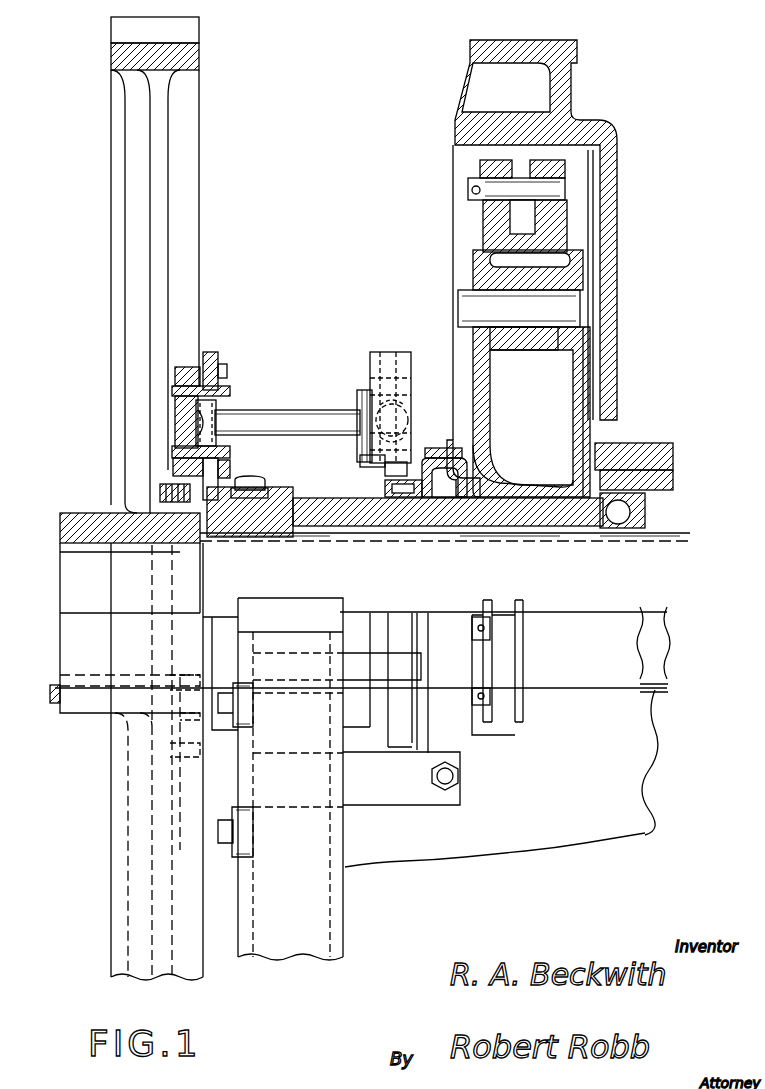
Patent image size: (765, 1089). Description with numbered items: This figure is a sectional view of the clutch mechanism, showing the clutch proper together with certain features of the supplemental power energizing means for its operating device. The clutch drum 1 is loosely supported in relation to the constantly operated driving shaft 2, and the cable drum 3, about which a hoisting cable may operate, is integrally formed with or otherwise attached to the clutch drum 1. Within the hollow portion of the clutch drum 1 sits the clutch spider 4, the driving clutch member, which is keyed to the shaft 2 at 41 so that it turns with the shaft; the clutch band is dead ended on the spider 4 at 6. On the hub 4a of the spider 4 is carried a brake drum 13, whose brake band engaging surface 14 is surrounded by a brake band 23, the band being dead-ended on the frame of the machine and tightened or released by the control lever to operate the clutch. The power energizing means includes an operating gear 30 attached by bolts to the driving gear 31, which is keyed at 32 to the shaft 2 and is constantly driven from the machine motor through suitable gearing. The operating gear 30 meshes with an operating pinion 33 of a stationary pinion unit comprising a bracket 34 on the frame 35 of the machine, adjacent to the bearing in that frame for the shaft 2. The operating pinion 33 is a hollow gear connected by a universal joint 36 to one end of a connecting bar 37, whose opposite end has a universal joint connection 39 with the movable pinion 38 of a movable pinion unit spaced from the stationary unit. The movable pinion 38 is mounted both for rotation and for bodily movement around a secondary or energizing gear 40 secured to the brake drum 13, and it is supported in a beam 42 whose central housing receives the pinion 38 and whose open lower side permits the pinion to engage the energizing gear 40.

The clutch drum 1 is at (614, 138).
The driving shaft 2 is at (682, 549).
The cable drum 3 is at (648, 447).
The clutch spider 4 is at (575, 346).
The hub 4a is at (500, 488).
The dead end of clutch band 6 is at (552, 190).
The brake drum 13 is at (464, 472).
The brake band engaging surface 14 is at (430, 458).
The brake band 23 is at (436, 446).
The operating gear 30 is at (181, 470).
The driving gear 31 is at (199, 193).
The key 32 is at (92, 548).
The operating pinion 33 is at (190, 360).
The bracket 34 is at (240, 480).
The frame 35 is at (318, 498).
The universal joint 36 is at (222, 396).
The connecting bar 37 is at (290, 408).
The movable pinion 38 is at (392, 350).
The universal joint connection 39 is at (358, 447).
The energizing gear 40 is at (408, 497).
The key 41 is at (548, 536).
The beam 42 is at (412, 355).